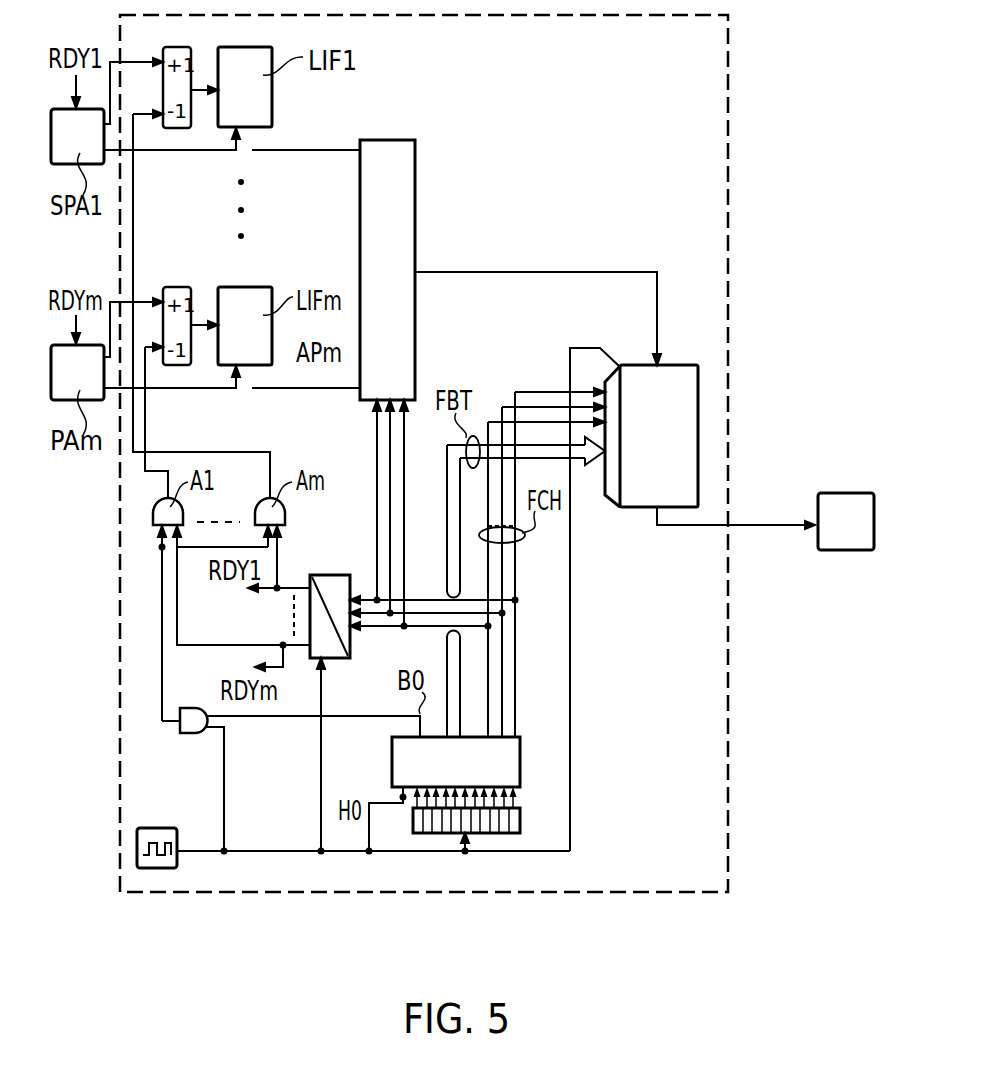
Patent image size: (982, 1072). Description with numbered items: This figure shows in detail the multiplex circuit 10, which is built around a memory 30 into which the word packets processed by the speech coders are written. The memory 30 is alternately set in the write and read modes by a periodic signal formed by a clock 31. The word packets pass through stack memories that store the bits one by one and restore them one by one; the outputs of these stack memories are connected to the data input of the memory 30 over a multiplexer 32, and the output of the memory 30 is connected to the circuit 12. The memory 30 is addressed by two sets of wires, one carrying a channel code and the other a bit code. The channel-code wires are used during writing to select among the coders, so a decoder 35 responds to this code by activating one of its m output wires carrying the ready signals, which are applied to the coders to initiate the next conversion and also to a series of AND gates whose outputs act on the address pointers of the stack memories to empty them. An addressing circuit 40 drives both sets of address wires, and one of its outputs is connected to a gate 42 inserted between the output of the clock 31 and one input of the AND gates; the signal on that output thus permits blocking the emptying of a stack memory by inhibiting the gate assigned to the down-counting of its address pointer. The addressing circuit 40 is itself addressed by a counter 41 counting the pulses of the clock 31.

The multiplex circuit 10 is at (729, 737).
The circuit 12 is at (841, 503).
The memory 30 is at (632, 378).
The clock 31 is at (163, 803).
The multiplexer 32 is at (397, 198).
The decoder 35 is at (328, 575).
The addressing circuit 40 is at (513, 757).
The counter 41 is at (515, 823).
The gate 42 is at (193, 733).